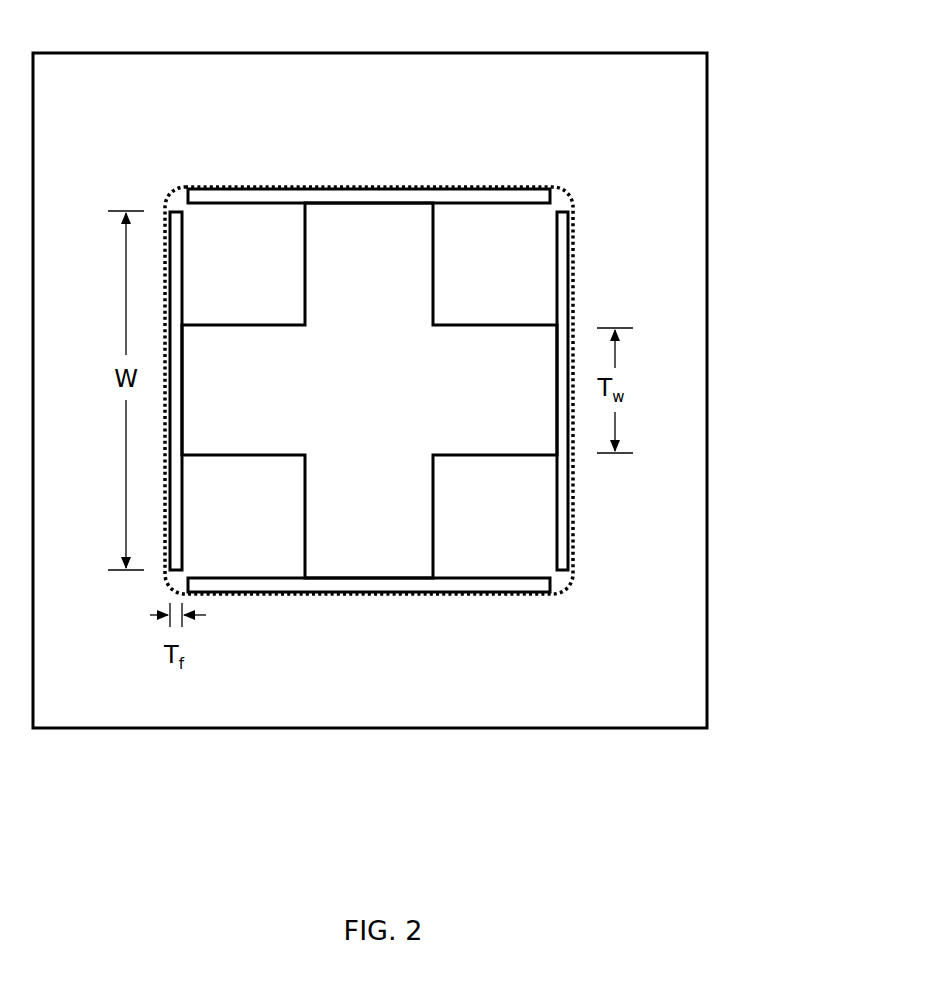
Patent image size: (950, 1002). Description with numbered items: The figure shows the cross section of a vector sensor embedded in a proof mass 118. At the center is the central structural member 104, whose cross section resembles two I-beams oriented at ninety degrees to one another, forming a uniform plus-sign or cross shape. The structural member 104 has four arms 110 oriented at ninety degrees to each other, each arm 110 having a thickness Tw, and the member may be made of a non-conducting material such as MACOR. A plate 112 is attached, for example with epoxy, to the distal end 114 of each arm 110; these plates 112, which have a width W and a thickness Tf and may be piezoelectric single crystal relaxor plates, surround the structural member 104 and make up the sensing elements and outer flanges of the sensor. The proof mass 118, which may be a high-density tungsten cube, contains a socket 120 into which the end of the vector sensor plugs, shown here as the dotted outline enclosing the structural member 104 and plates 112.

The central structural member 104 is at (372, 392).
The arm 110 is at (220, 325).
The plate 112 is at (370, 187).
The distal end 114 is at (544, 308).
The proof mass 118 is at (707, 390).
The socket 120 is at (570, 190).